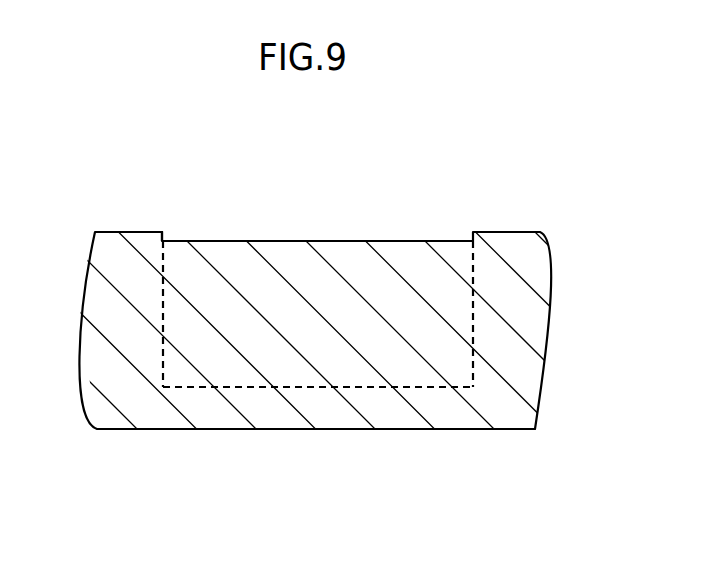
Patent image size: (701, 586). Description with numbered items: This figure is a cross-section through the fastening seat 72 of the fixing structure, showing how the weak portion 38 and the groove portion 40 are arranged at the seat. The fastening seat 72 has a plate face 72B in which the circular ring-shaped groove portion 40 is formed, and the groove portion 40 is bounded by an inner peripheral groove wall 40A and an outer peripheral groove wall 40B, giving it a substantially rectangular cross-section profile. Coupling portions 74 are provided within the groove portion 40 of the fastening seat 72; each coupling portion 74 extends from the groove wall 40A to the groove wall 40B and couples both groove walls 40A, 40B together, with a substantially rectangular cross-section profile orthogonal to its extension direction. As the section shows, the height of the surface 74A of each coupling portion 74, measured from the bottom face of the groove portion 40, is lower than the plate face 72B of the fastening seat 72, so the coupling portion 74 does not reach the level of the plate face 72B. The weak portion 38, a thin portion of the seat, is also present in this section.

The weak portion 38 is at (322, 408).
The groove portion 40 is at (359, 382).
The groove wall 40A is at (473, 302).
The groove wall 40B is at (163, 300).
The fastening seat 72 is at (107, 190).
The plate face 72B is at (132, 231).
The coupling portion 74 is at (300, 237).
The surface 74A is at (381, 241).